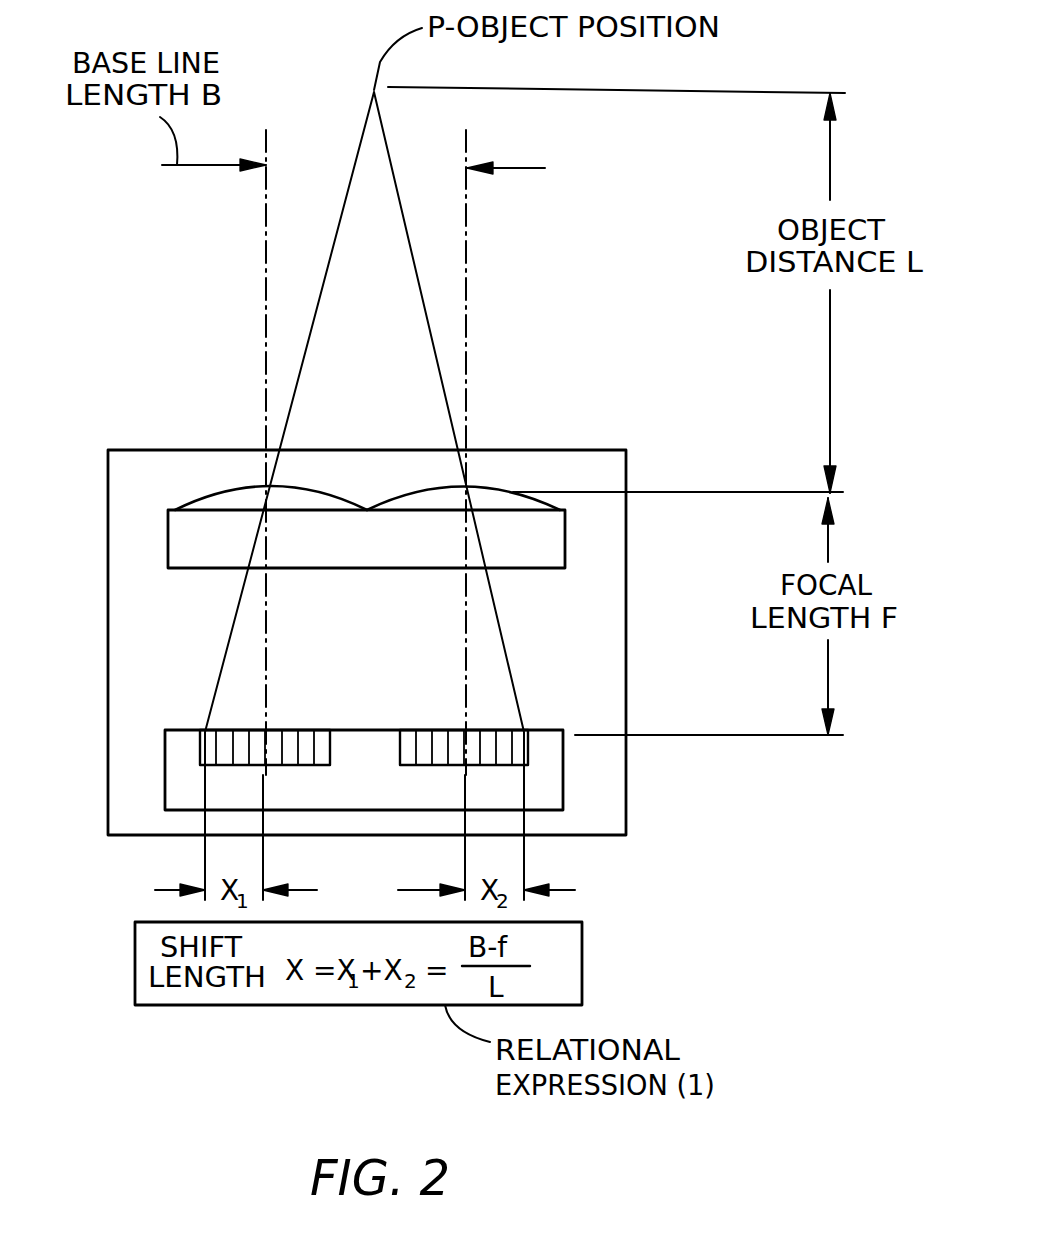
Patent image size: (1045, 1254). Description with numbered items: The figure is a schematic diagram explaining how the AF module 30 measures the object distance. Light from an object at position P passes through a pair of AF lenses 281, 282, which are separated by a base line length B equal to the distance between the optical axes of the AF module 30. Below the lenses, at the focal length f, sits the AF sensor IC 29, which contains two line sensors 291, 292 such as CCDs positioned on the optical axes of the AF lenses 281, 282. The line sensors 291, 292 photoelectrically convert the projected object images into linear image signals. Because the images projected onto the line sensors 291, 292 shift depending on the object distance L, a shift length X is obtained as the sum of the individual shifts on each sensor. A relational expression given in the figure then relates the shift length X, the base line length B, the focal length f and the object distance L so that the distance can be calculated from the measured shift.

The AF lens 281 is at (236, 487).
The AF lens 282 is at (482, 490).
The AF sensor IC 29 is at (426, 729).
The line sensor 291 is at (297, 730).
The line sensor 292 is at (432, 730).
The AF module 30 is at (626, 815).